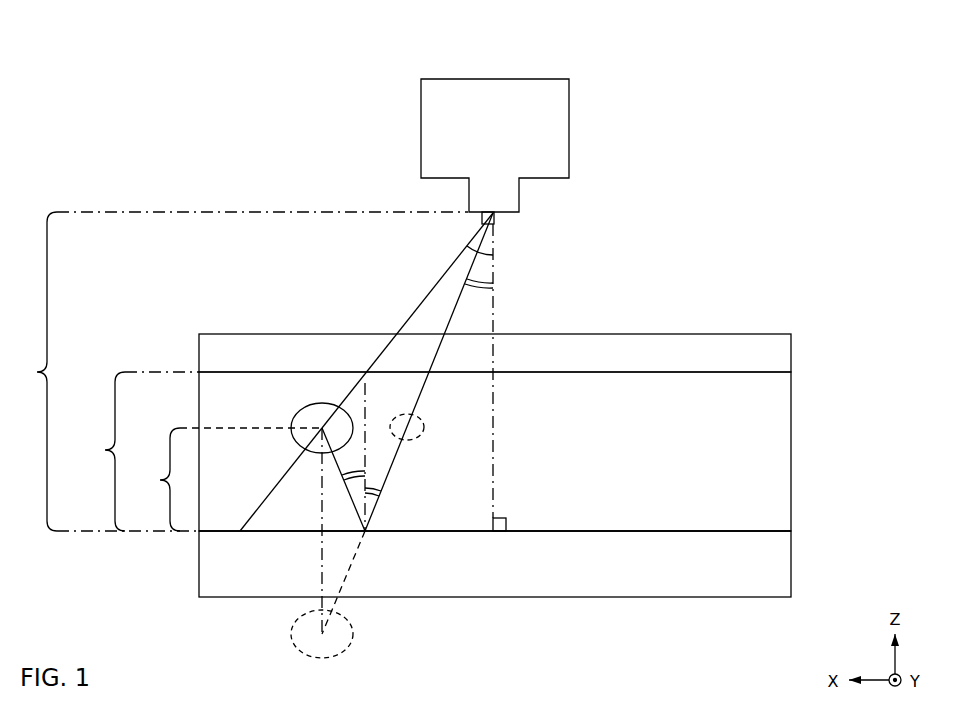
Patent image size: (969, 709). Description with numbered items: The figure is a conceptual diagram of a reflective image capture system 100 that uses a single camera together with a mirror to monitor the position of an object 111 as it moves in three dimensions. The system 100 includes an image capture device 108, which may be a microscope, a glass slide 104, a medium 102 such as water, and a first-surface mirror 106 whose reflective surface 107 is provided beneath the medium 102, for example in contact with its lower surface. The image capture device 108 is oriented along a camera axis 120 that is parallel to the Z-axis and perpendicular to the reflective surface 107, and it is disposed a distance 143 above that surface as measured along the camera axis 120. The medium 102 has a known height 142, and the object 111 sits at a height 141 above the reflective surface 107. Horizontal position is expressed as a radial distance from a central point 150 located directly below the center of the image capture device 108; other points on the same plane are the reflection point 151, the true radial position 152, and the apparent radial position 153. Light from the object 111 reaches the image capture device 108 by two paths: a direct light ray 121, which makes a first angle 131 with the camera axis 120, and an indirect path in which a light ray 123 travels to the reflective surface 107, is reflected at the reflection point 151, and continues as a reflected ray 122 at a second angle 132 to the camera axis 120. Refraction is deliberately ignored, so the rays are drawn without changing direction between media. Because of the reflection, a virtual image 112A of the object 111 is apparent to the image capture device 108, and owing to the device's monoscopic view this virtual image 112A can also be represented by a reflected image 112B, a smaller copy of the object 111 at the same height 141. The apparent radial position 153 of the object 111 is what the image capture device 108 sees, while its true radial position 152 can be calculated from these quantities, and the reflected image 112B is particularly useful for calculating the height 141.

The reflective image capture system 100 is at (863, 74).
The medium 102 is at (791, 450).
The glass slide 104 is at (791, 353).
The first-surface mirror 106 is at (791, 563).
The reflective surface 107 is at (665, 528).
The image capture device 108 is at (569, 145).
The object 111 is at (322, 403).
The virtual image 112A is at (352, 634).
The reflected image 112B is at (418, 437).
The camera axis 120 is at (498, 431).
The direct light ray 121 is at (444, 271).
The reflected light ray 122 is at (449, 300).
The light ray toward mirror 123 is at (344, 467).
The angle θ1 131 is at (487, 260).
The angle θ2 132 is at (478, 297).
The height z1 141 is at (225, 479).
The height z2 142 is at (135, 451).
The distance z3 143 is at (236, 371).
The central point r0 150 is at (495, 533).
The radial position r1 151 is at (369, 534).
The radial position r2 152 is at (319, 534).
The radial position r3 153 is at (235, 536).